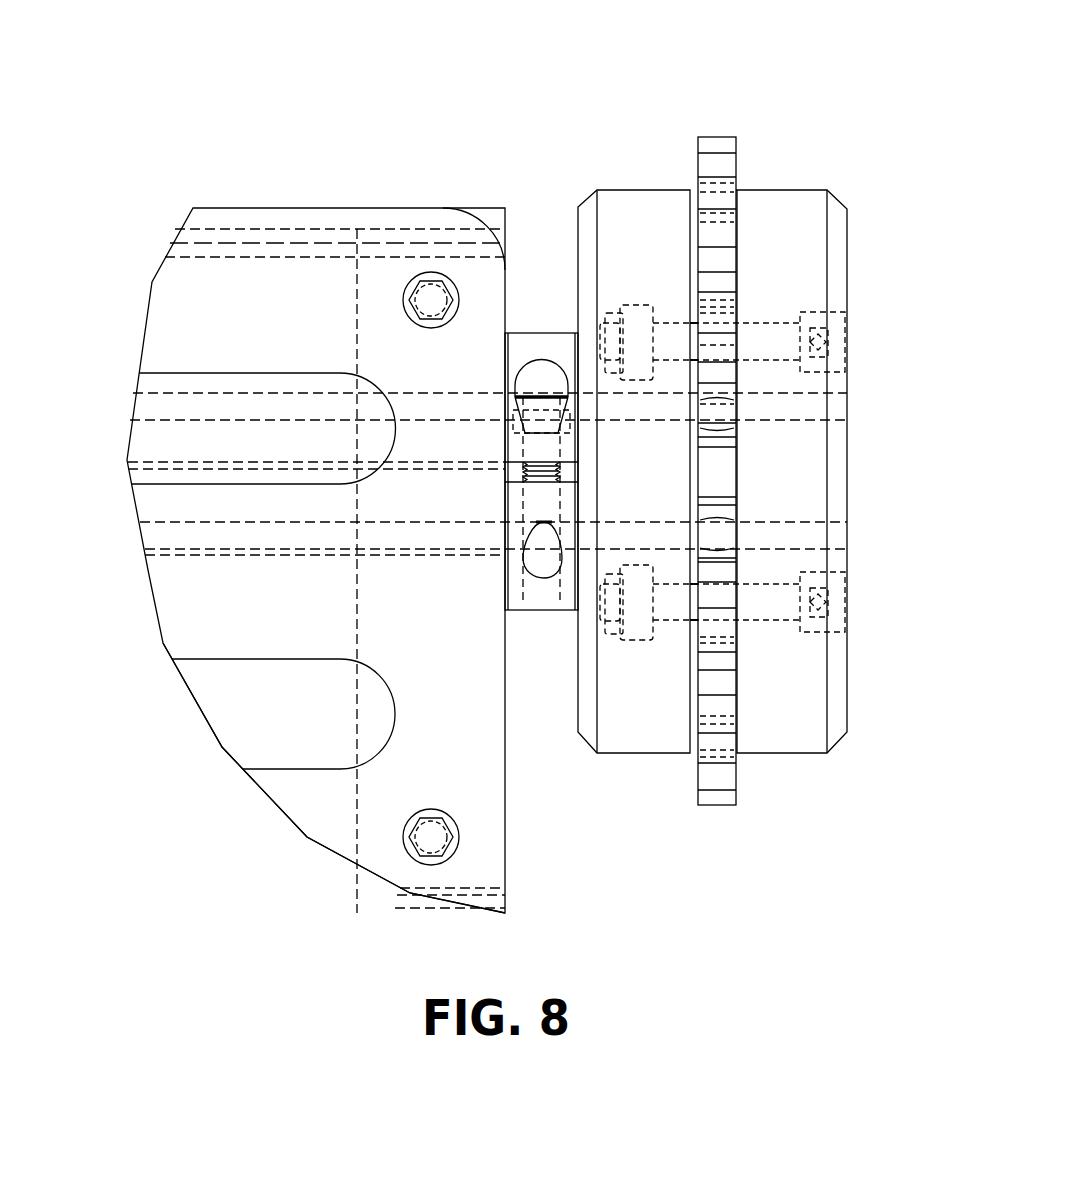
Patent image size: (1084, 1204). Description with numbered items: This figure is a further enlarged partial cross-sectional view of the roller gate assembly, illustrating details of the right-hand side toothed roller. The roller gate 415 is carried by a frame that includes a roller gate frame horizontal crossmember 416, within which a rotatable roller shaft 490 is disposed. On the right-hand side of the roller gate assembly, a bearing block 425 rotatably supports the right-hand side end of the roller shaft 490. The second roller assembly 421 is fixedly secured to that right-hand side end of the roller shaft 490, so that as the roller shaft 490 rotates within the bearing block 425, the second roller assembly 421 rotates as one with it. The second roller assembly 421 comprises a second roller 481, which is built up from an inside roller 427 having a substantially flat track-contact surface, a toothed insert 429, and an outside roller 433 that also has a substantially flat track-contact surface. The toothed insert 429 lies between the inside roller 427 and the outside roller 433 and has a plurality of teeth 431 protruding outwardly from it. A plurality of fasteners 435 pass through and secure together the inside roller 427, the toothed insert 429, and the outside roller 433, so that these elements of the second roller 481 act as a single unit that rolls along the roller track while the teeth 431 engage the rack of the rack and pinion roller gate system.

The roller gate 415 is at (205, 610).
The roller gate frame horizontal crossmember 416 is at (262, 292).
The second roller assembly 421 is at (771, 469).
The bearing block 425 is at (542, 333).
The inside roller 427 is at (638, 740).
The toothed insert 429 is at (714, 469).
The teeth 431 is at (715, 778).
The outside roller 433 is at (793, 217).
The fasteners 435 is at (775, 337).
The second roller 481 is at (748, 178).
The roller shaft 490 is at (243, 440).